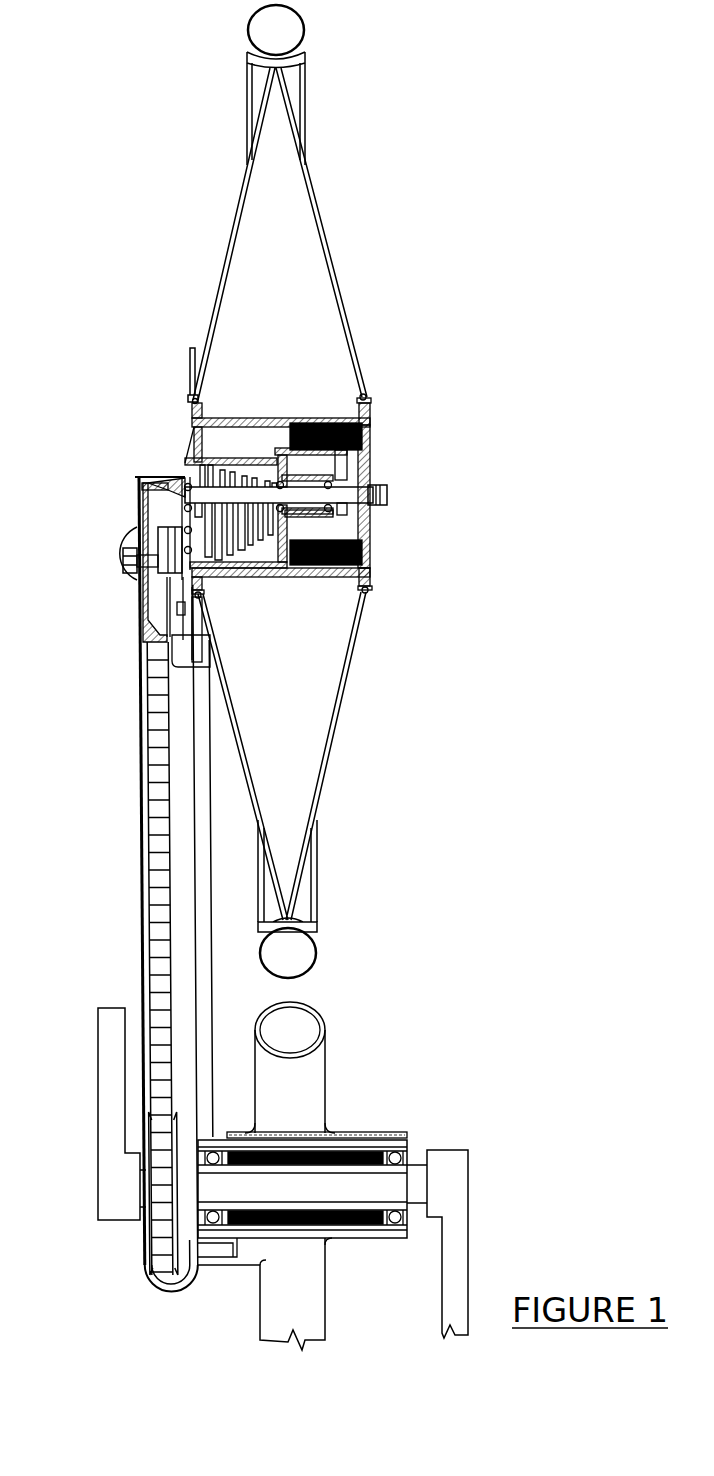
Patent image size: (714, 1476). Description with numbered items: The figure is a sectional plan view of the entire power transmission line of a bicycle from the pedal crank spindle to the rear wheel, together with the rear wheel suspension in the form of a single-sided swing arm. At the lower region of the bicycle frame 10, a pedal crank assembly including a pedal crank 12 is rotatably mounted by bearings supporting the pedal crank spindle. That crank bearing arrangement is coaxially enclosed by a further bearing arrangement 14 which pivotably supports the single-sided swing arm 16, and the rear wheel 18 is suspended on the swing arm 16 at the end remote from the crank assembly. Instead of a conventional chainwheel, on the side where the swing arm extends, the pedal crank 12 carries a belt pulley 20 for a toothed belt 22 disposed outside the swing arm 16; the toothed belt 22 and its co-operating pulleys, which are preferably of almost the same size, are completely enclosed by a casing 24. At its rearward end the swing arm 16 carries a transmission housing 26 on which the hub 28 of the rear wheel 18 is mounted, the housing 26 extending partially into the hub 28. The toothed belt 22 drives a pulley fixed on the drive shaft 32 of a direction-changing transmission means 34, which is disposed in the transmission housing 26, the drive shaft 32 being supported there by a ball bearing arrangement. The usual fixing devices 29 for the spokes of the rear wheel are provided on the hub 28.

The bicycle frame 10 is at (302, 1107).
The pedal crank 12 is at (455, 1190).
The bearing arrangement 14 is at (367, 1140).
The single-sided swing arm 16 is at (203, 1033).
The rear wheel 18 is at (372, 284).
The belt pulley 20 is at (153, 1245).
The toothed belt 22 is at (160, 902).
The casing 24 is at (138, 847).
The transmission housing 26 is at (170, 477).
The hub 28 is at (293, 418).
The fixing devices 29 is at (367, 397).
The drive shaft 32 is at (127, 586).
The direction-changing transmission means 34 is at (168, 553).